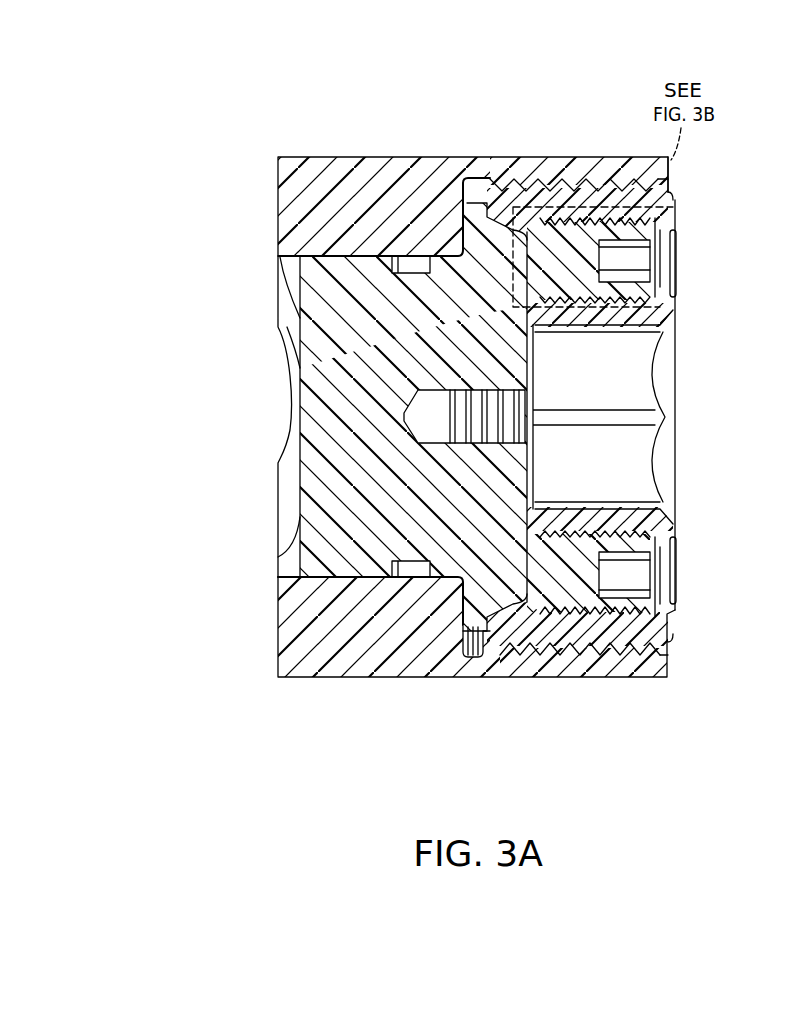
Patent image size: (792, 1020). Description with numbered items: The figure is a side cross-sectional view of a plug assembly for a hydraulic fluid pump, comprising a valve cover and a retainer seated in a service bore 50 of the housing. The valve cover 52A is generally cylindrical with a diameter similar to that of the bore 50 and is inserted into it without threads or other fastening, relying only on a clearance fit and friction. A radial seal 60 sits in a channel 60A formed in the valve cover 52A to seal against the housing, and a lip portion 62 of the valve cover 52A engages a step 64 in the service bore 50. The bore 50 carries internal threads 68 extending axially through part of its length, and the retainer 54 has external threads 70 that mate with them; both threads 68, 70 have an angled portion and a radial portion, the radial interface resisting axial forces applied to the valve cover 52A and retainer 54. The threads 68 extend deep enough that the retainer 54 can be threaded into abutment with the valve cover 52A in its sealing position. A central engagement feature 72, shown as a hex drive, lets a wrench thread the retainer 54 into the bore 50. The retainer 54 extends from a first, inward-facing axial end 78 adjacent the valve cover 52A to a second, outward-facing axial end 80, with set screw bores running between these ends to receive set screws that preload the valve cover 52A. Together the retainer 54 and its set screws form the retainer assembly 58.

The service bore 50 is at (276, 265).
The valve cover 52A is at (323, 545).
The retainer 54 is at (674, 308).
The retainer assembly 58 is at (708, 208).
The radial seal 60 is at (410, 257).
The channel 60A is at (408, 257).
The lip portion 62 is at (474, 242).
The step 64 is at (462, 628).
The internal threads 68 is at (557, 192).
The external threads 70 is at (607, 207).
The central engagement feature 72 is at (638, 470).
The first axial end 78 is at (528, 308).
The second axial end 80 is at (674, 612).